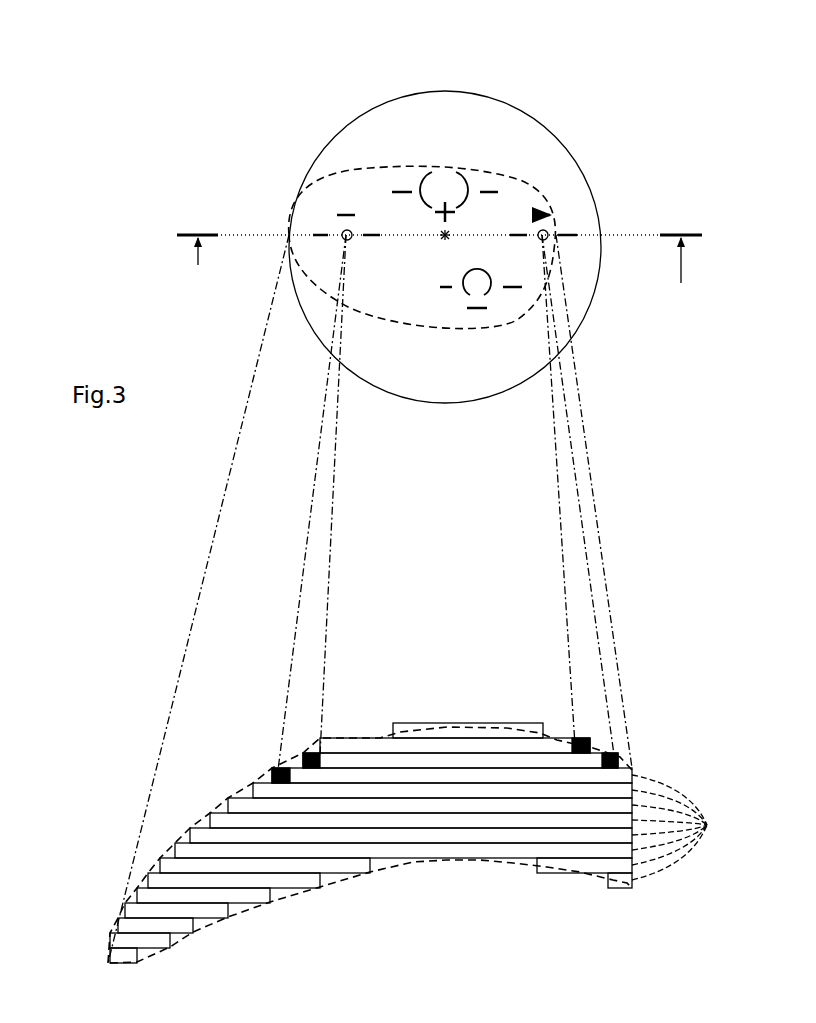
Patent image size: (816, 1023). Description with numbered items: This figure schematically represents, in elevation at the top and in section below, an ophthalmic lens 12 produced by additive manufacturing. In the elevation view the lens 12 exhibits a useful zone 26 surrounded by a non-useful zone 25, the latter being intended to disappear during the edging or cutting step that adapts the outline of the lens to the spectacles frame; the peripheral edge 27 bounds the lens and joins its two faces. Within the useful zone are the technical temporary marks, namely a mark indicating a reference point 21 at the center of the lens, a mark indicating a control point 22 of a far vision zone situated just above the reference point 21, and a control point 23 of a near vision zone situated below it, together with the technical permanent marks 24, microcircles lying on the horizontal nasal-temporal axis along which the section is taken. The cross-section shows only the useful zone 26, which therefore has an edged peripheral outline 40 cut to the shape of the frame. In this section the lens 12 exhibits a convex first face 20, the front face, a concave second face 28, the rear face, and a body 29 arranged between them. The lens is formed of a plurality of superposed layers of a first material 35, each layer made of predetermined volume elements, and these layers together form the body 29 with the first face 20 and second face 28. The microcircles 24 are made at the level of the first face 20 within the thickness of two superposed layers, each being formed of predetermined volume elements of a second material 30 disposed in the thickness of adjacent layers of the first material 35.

The ophthalmic lens 12 is at (591, 70).
The first face 20 is at (437, 102).
The reference point 21 is at (438, 238).
The control point of a far vision zone 22 is at (447, 182).
The control point of a near vision zone 23 is at (462, 306).
The technical permanent marks 24 is at (322, 220).
The non-useful zone 25 is at (573, 188).
The useful zone 26 is at (326, 200).
The peripheral edge 27 is at (598, 292).
The second face 28 is at (507, 864).
The body 29 is at (367, 822).
The second material 30 is at (305, 752).
The first material 35 is at (689, 827).
The edged peripheral outline 40 is at (394, 326).